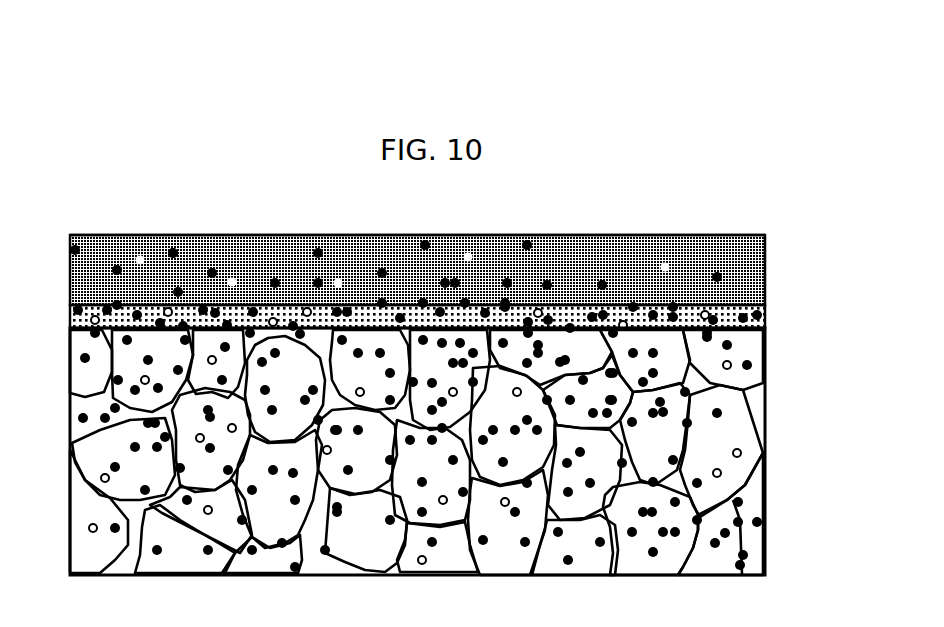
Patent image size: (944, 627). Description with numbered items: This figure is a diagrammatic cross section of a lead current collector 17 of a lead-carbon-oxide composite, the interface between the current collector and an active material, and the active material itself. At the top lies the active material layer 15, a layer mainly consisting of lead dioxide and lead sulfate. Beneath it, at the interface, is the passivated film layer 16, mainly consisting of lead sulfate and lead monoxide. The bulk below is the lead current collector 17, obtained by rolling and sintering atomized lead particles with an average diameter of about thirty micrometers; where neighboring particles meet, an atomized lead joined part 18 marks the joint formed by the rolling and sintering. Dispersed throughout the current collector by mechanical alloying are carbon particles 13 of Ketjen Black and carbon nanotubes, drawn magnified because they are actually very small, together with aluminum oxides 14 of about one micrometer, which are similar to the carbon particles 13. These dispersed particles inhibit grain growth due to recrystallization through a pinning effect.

The carbon particles 13 is at (215, 216).
The aluminum oxides 14 is at (417, 205).
The active material layer 15 is at (771, 240).
The passivated film layer 16 is at (771, 307).
The lead current collector 17 is at (771, 335).
The atomized lead joined part 18 is at (758, 454).